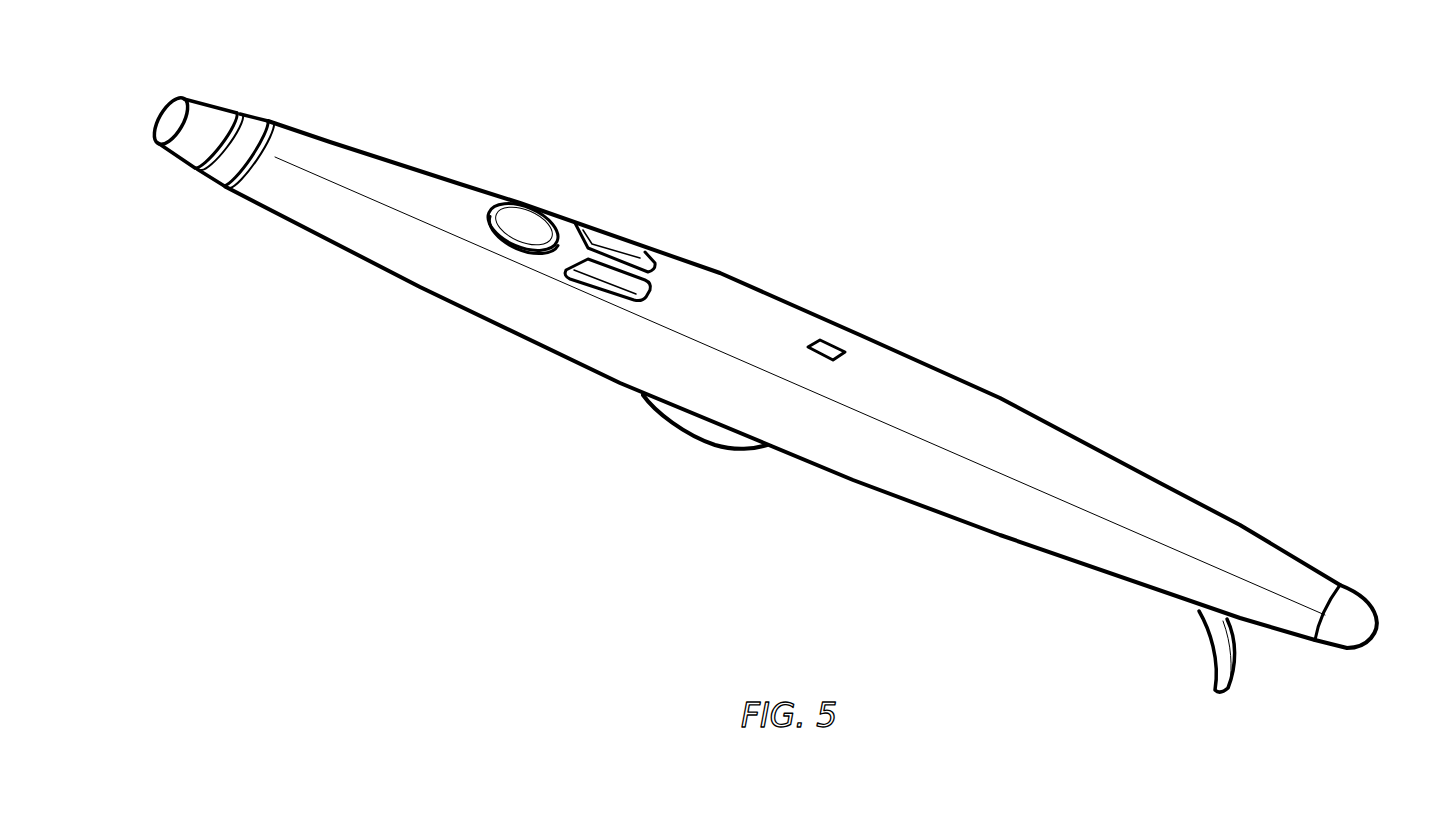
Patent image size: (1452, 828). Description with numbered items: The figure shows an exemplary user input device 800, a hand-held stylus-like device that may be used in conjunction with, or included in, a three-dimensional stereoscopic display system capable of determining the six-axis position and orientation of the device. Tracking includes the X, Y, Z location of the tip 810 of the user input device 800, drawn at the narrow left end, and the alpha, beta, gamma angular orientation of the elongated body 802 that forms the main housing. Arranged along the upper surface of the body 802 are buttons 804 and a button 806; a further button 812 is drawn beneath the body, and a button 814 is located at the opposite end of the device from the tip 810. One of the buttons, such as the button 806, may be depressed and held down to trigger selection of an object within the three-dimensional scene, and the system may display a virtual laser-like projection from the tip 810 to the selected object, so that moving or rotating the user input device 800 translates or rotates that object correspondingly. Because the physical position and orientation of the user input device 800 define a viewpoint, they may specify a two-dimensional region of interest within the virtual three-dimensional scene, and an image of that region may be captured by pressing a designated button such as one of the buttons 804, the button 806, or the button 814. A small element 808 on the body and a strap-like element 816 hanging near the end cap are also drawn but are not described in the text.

The user input device 800 is at (935, 216).
The body 802 is at (960, 378).
The buttons 804 is at (617, 277).
The button 806 is at (530, 215).
The indicator 808 is at (830, 346).
The tip 810 is at (170, 120).
The button 812 is at (698, 427).
The button 814 is at (1355, 603).
The lanyard 816 is at (1228, 688).